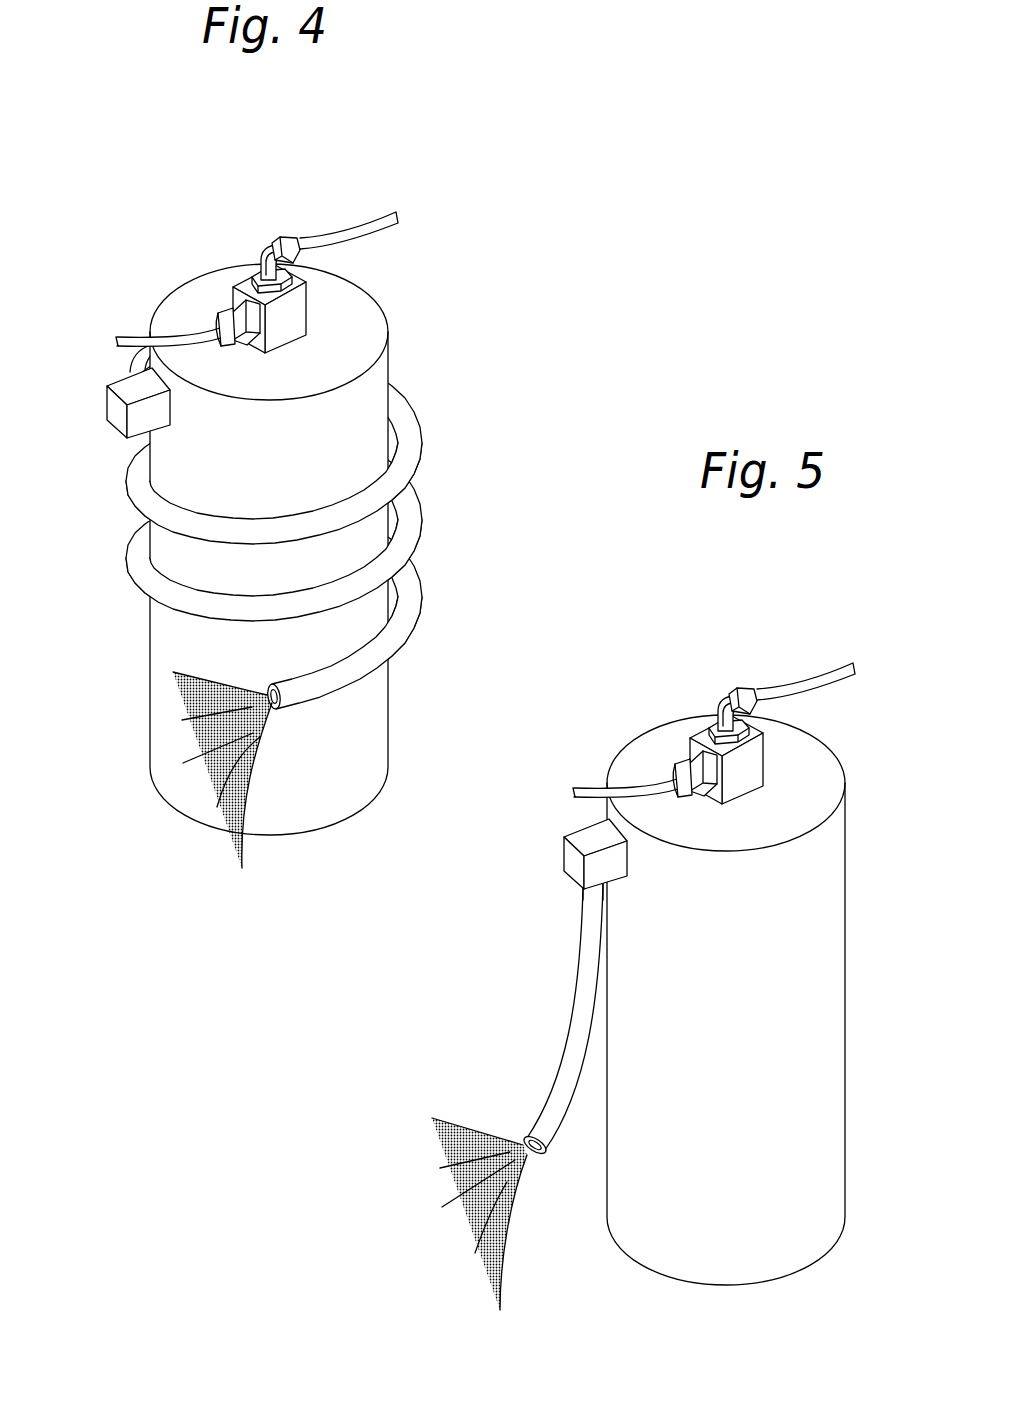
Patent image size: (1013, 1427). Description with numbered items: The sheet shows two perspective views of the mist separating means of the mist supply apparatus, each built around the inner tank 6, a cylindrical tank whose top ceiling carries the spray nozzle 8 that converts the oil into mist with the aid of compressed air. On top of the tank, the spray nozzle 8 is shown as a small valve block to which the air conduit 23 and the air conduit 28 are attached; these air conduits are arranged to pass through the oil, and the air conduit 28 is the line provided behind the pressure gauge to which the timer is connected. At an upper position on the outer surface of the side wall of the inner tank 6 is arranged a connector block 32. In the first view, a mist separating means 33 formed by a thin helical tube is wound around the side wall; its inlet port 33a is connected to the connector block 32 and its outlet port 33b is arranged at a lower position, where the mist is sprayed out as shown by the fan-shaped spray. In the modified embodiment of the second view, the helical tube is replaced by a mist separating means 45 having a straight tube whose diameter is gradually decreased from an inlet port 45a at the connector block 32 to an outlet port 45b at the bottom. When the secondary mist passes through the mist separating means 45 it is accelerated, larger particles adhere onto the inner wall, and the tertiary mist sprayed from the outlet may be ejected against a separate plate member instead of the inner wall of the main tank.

In FIG. 4, the inner tank 6 is at (355, 732).
In FIG. 5, the inner tank 6 is at (815, 1183).
In FIG. 4, the spray nozzle 8 is at (290, 318).
In FIG. 5, the spray nozzle 8 is at (786, 746).
In FIG. 4, the air conduit 23 is at (346, 220).
In FIG. 5, the air conduit 23 is at (806, 651).
In FIG. 4, the air conduit 28 is at (130, 333).
In FIG. 5, the air conduit 28 is at (621, 750).
In FIG. 4, the connector block 32 is at (115, 410).
In FIG. 5, the connector block 32 is at (573, 852).
In FIG. 4, the mist separating means 33 is at (274, 525).
In FIG. 4, the inlet port 33a is at (130, 370).
In FIG. 4, the outlet port 33b is at (280, 710).
In FIG. 5, the mist separating means 45 is at (585, 1003).
In FIG. 5, the inlet port 45a is at (590, 898).
In FIG. 5, the outlet port 45b is at (535, 1155).